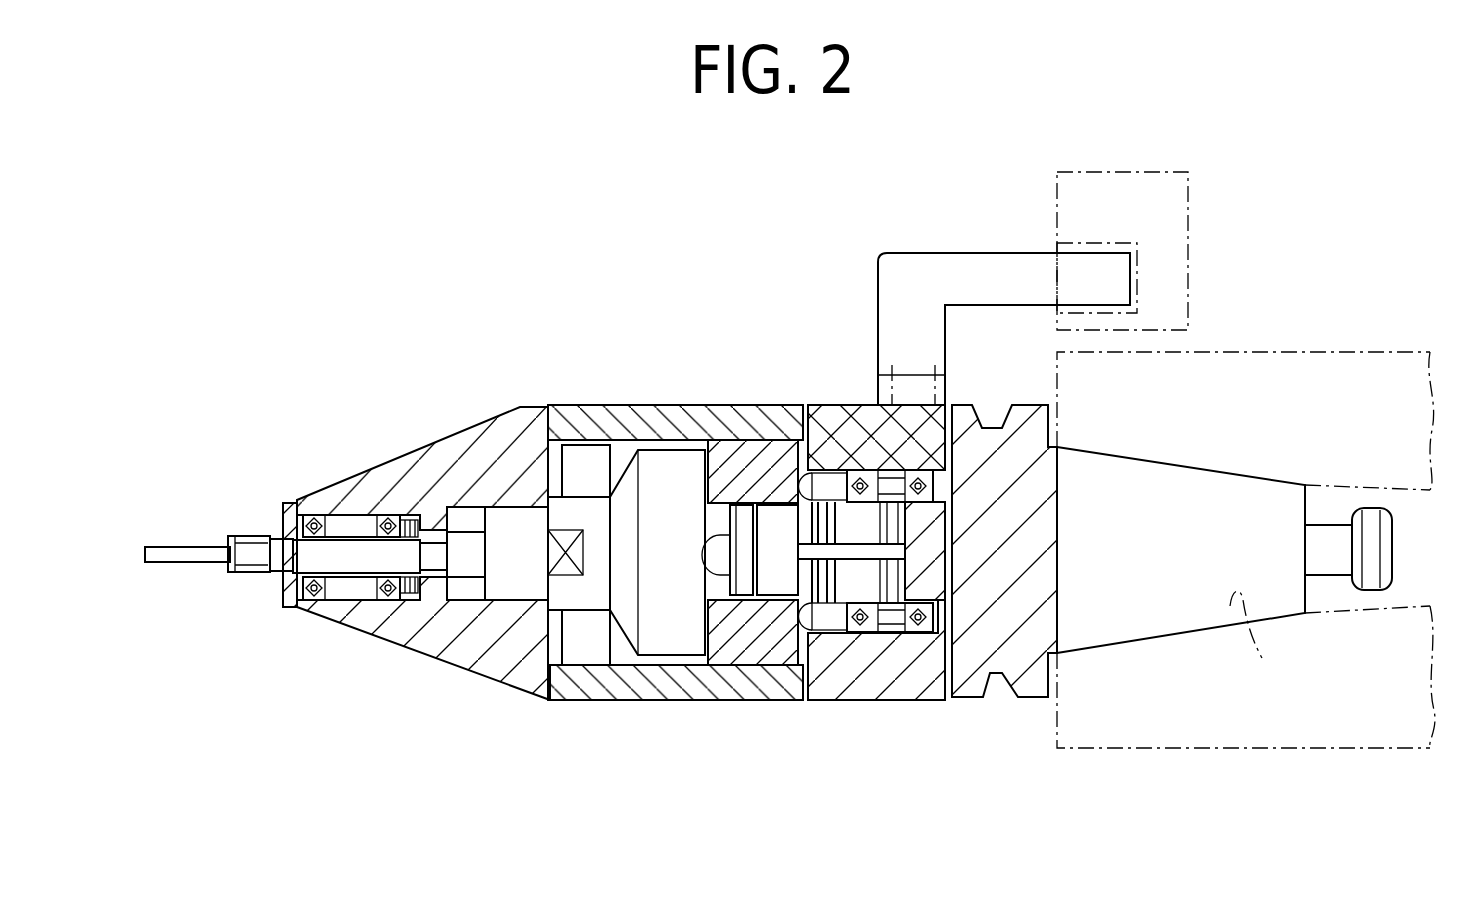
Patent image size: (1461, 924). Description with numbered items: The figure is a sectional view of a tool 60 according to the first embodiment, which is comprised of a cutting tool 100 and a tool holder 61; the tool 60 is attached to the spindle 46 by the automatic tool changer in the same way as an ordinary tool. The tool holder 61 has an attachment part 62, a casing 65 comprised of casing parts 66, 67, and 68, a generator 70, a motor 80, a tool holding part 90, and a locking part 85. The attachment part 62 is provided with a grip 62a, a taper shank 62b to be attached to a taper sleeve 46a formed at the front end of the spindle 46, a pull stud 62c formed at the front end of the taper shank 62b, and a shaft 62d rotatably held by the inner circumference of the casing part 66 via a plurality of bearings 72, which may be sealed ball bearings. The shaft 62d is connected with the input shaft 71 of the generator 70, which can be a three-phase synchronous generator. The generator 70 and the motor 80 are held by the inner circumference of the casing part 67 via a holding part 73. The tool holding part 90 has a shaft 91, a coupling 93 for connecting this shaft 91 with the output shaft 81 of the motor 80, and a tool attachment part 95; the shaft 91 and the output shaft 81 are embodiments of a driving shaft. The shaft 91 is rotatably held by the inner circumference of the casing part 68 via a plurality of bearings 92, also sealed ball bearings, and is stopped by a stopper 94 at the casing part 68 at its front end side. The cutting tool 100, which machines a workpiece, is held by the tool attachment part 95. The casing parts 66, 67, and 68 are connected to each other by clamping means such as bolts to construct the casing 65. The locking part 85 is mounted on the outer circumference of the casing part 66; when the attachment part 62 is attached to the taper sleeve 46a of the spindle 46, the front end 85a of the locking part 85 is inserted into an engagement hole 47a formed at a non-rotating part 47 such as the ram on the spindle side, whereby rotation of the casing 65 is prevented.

The spindle 46 is at (1298, 748).
The taper sleeve 46a is at (1265, 644).
The non-rotating part 47 is at (1188, 232).
The engagement hole 47a is at (1137, 290).
The tool 60 is at (930, 918).
The tool holder 61 is at (985, 762).
The attachment part 62 is at (1030, 683).
The grip 62a is at (987, 680).
The taper shank 62b is at (1147, 650).
The pull stud 62c is at (1373, 560).
The shaft 62d is at (888, 590).
The casing 65 is at (780, 822).
The casing part 66 is at (820, 700).
The casing part 67 is at (678, 700).
The casing part 68 is at (517, 683).
The generator 70 is at (770, 585).
The input shaft 71 is at (805, 468).
The bearings 72 is at (912, 470).
The holding part 73 is at (792, 662).
The motor 80 is at (660, 628).
The output shaft 81 is at (513, 565).
The locking part 85 is at (979, 258).
The front end 85a is at (1102, 185).
The tool holding part 90 is at (476, 762).
The shaft 91 is at (387, 555).
The bearings 92 is at (313, 558).
The coupling 93 is at (467, 568).
The stopper 94 is at (288, 605).
The tool attachment part 95 is at (240, 576).
The cutting tool 100 is at (168, 562).